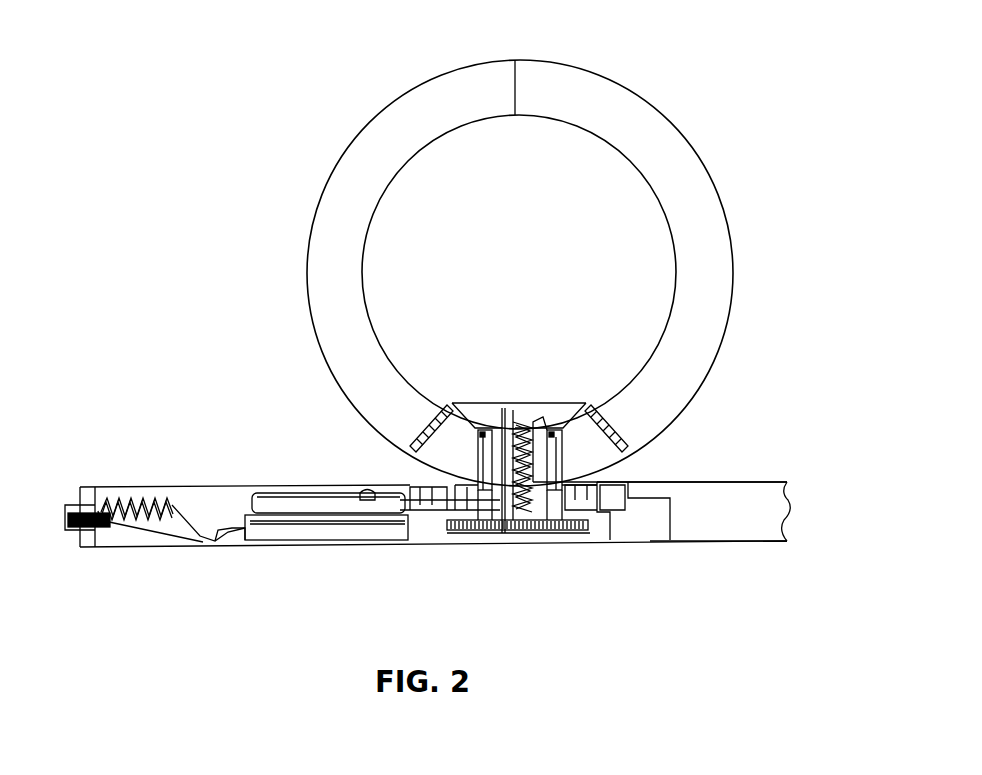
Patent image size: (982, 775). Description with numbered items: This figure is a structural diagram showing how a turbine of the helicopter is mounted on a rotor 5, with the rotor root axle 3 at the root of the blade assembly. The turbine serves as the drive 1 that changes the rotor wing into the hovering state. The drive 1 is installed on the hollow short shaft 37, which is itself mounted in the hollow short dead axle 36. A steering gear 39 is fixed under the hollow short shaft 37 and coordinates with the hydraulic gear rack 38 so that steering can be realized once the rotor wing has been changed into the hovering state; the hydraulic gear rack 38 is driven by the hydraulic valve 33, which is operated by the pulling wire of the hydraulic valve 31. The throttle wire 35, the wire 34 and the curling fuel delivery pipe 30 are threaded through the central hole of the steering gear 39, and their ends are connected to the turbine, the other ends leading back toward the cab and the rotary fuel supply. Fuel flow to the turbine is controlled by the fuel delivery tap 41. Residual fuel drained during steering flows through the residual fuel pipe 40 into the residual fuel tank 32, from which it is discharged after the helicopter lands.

The drive 1 is at (453, 153).
The rotor root axle 3 is at (74, 530).
The rotor 5 is at (623, 490).
The curling fuel delivery pipe 30 is at (435, 500).
The pulling wire of the hydraulic valve 31 is at (293, 533).
The residual fuel tank 32 is at (650, 519).
The hydraulic valve 33 is at (247, 503).
The wire 34 is at (502, 408).
The throttle wire 35 is at (570, 390).
The hollow short dead axle 36 is at (482, 450).
The hollow short shaft 37 is at (537, 458).
The hydraulic gear rack 38 is at (413, 493).
The steering gear 39 is at (525, 532).
The residual fuel pipe 40 is at (367, 510).
The fuel delivery tap 41 is at (217, 540).